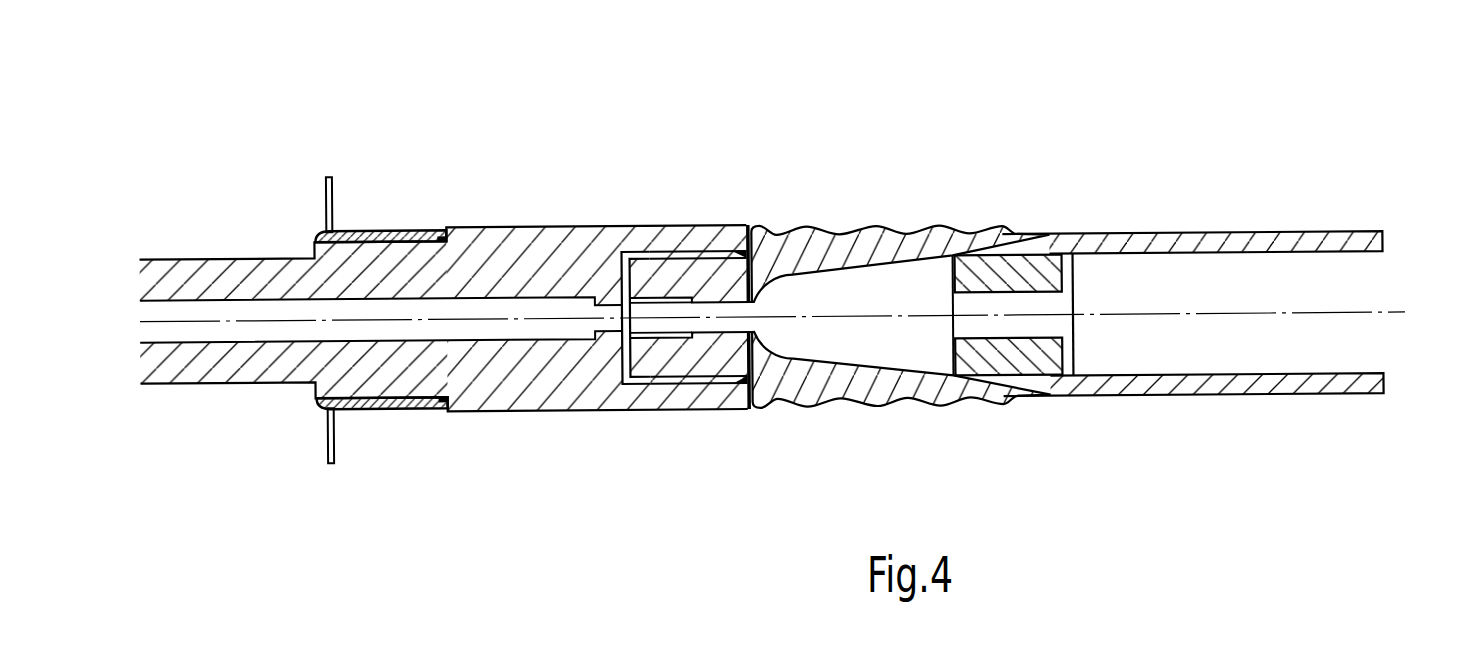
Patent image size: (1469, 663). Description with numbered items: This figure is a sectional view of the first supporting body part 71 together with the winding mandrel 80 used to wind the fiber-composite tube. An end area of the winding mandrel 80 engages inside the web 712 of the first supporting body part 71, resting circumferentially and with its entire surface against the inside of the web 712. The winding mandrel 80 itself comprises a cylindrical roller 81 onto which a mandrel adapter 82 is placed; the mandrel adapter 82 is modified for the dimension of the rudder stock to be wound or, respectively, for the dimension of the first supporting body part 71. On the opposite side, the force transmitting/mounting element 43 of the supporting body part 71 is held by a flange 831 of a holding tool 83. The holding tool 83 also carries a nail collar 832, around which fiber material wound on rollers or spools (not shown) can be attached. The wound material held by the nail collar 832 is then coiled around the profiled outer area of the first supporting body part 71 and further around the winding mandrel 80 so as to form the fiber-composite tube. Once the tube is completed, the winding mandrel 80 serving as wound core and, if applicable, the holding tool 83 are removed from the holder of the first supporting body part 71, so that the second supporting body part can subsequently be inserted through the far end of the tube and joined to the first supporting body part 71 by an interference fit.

The force transmitting/mounting element 43 is at (678, 355).
The first supporting body part 71 is at (792, 242).
The web 712 is at (937, 233).
The winding mandrel 80 is at (1195, 227).
The cylindrical roller 81 is at (1262, 352).
The mandrel adapter 82 is at (1302, 233).
The holding tool 83 is at (547, 248).
The flange 831 is at (702, 240).
The nail collar 832 is at (367, 226).